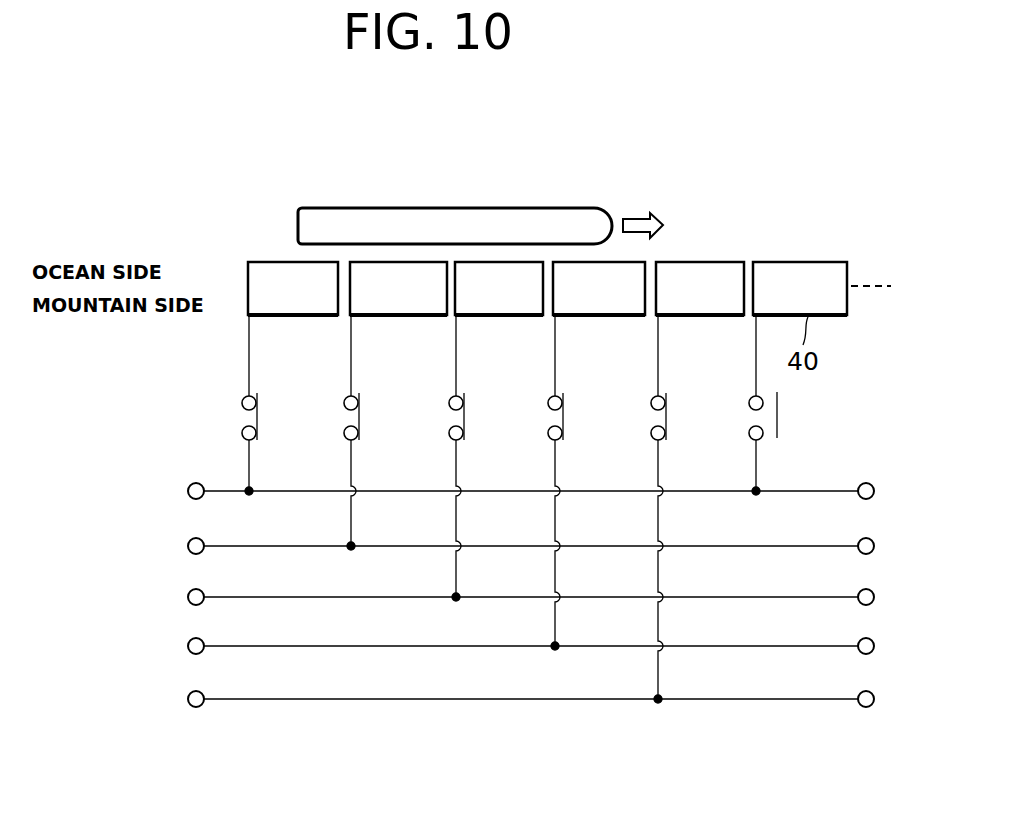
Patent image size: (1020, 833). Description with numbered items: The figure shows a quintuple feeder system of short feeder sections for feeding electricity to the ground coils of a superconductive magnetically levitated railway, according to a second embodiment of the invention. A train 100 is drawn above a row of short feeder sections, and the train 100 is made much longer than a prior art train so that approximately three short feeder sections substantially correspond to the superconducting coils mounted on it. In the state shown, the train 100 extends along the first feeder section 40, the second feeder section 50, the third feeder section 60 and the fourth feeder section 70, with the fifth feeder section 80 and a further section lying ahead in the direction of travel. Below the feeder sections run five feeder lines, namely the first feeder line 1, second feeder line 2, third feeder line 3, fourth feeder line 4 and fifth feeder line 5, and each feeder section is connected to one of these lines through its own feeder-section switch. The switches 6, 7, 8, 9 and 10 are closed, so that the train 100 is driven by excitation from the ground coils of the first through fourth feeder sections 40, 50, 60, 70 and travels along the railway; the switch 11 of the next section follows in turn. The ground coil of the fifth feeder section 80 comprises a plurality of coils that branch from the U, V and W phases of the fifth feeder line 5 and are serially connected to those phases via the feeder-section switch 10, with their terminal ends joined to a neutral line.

The train 100 is at (503, 207).
The first feeder section 40 is at (313, 317).
The second feeder section 50 is at (413, 317).
The third feeder section 60 is at (513, 317).
The fourth feeder section 70 is at (613, 317).
The fifth feeder section 80 is at (713, 317).
The switch 6 is at (259, 442).
The switch 7 is at (361, 442).
The switch 8 is at (466, 442).
The switch 9 is at (565, 442).
The feeder-section switch 10 is at (668, 442).
The switch 11 is at (768, 442).
The first feeder line 1 is at (509, 492).
The second feeder line 2 is at (509, 547).
The third feeder line 3 is at (509, 598).
The fourth feeder line 4 is at (509, 647).
The fifth feeder line 5 is at (509, 700).